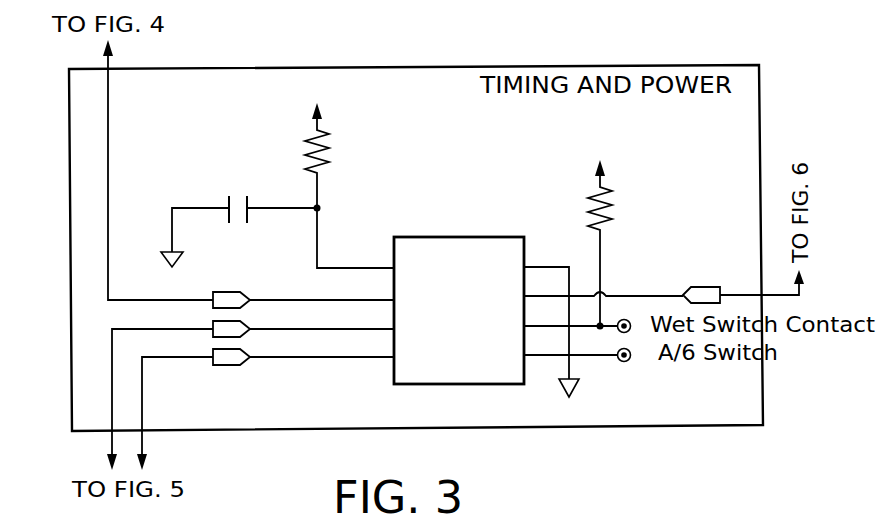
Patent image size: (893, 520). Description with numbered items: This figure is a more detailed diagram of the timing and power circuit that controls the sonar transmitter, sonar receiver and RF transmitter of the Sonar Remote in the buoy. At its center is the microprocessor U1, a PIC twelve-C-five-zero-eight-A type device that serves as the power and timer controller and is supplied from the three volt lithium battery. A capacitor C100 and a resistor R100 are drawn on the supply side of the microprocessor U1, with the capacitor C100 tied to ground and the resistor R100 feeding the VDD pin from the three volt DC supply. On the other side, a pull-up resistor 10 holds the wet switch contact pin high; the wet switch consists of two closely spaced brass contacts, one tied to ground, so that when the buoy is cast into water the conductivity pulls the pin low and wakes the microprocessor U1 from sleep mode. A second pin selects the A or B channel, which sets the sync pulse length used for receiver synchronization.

The capacitor C100 is at (227, 205).
The resistor R100 is at (326, 157).
The microprocessor U1 is at (491, 237).
The pull-up resistor 10 is at (608, 229).